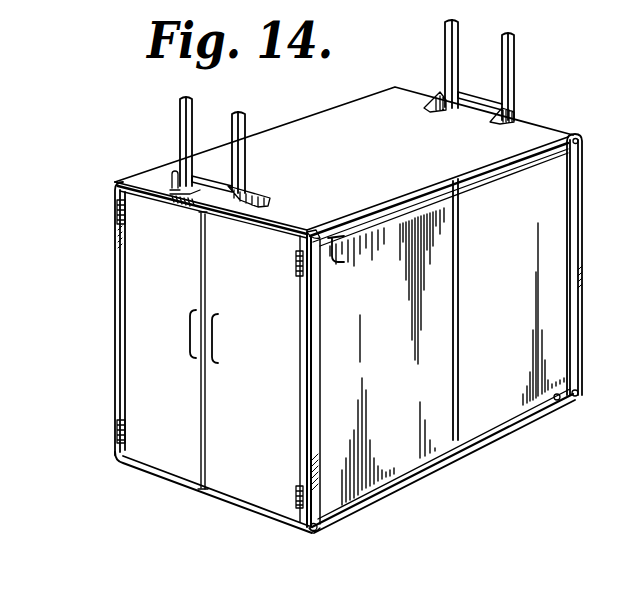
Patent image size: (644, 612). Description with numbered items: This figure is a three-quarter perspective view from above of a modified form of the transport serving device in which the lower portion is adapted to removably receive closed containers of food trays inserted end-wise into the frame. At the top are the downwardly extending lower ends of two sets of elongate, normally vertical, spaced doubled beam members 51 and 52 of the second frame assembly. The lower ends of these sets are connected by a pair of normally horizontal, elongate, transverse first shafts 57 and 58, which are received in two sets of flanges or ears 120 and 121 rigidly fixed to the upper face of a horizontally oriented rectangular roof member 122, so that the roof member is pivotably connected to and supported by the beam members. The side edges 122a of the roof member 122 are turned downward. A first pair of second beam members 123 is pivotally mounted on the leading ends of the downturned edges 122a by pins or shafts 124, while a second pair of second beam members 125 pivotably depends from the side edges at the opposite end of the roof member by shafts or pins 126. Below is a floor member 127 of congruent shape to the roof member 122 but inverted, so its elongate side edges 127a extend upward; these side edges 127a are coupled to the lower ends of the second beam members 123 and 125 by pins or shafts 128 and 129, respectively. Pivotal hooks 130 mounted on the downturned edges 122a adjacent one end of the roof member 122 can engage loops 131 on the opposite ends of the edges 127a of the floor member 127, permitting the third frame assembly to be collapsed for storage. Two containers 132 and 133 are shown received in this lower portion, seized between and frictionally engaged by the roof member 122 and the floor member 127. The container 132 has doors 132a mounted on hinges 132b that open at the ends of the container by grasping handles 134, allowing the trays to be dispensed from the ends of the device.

The elongate doubled beam member 51 is at (180, 116).
The elongate doubled beam member 52 is at (445, 42).
The transverse first shaft 57 is at (226, 186).
The transverse first shaft 58 is at (478, 94).
The flanges or ears 120 is at (170, 182).
The flanges or ears 121 is at (438, 95).
The roof member 122 is at (348, 112).
The side edges of roof member 122a is at (125, 190).
The second beam members 123 is at (116, 274).
The pins or shafts 124 is at (316, 226).
The second beam members 125 is at (582, 298).
The shafts or pins 126 is at (582, 140).
The floor member 127 is at (208, 500).
The side edges of floor member 127a is at (528, 414).
The pins or shafts 128 is at (321, 529).
The pins or shafts 129 is at (583, 392).
The pivotal hooks 130 is at (346, 262).
The loops 131 is at (562, 402).
The container 132 is at (452, 296).
The doors 132a is at (216, 384).
The hinges 132b is at (296, 278).
The container 133 is at (522, 170).
The handles 134 is at (212, 318).